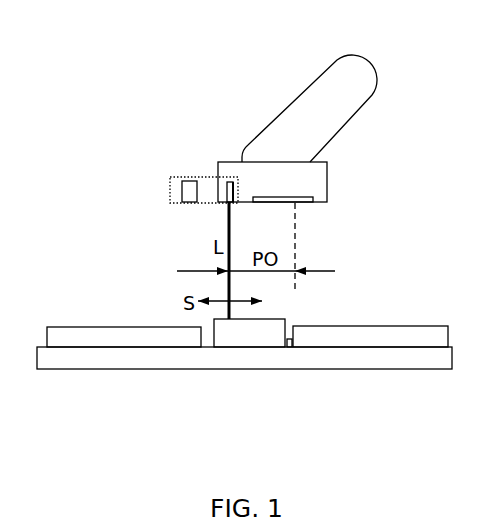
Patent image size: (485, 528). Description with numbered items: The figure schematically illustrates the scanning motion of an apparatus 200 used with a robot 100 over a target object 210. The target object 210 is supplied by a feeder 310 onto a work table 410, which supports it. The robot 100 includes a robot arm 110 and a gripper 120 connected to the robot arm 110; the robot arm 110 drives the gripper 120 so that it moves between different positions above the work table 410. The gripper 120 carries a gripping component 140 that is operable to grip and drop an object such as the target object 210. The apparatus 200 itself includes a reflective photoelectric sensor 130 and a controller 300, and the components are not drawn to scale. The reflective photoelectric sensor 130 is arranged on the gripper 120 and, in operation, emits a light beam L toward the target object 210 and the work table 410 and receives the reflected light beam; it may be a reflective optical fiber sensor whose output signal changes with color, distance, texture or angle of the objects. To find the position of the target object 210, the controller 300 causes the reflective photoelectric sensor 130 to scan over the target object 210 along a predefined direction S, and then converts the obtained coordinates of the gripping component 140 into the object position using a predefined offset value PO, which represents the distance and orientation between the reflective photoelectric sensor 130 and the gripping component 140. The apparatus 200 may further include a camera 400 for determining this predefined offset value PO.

The robot 100 is at (261, 96).
The robot arm 110 is at (353, 55).
The gripper 120 is at (328, 182).
The reflective photoelectric sensor 130 is at (230, 182).
The gripping component 140 is at (263, 197).
The apparatus 200 is at (170, 190).
The target object 210 is at (279, 318).
The controller 300 is at (190, 201).
The feeder 310 is at (80, 327).
The camera 400 is at (290, 347).
The work table 410 is at (237, 369).